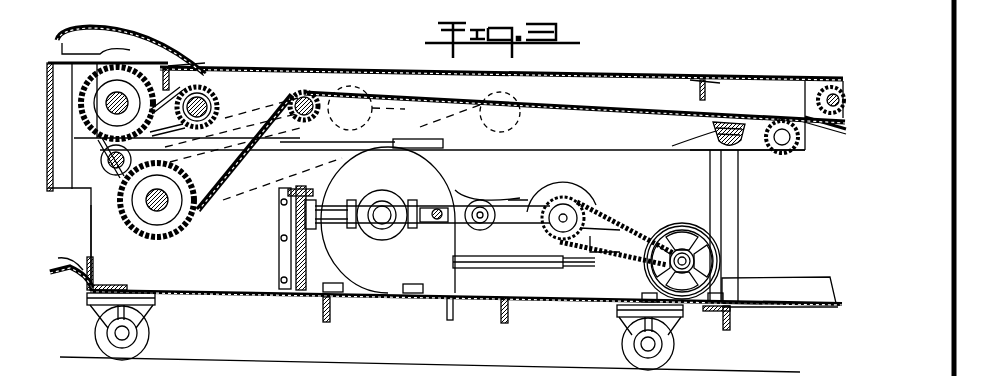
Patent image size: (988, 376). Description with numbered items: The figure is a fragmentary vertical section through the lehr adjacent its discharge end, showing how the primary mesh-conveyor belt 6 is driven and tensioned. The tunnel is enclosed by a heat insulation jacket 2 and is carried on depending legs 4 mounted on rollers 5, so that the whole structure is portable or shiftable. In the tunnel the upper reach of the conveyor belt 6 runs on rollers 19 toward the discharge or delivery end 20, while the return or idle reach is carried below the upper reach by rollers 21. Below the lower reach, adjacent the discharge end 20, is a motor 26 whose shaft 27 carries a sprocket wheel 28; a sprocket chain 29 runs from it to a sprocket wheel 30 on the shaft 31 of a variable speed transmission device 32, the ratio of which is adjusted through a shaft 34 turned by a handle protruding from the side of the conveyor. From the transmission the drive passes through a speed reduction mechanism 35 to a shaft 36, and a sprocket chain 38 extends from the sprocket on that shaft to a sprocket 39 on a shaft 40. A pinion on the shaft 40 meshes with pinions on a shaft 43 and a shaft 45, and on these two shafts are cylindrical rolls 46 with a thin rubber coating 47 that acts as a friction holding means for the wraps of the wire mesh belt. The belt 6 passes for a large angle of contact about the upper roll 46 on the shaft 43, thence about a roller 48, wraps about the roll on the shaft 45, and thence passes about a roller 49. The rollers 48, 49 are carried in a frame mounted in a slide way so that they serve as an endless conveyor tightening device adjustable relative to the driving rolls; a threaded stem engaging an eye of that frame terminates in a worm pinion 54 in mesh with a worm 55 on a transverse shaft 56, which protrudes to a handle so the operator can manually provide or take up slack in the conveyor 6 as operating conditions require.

The heat insulation jacket 2 is at (444, 217).
The depending legs 4 is at (150, 310).
The rollers 5 is at (148, 334).
The primary mesh-conveyor belt 6 is at (772, 78).
The rollers 19 is at (816, 102).
The discharge or delivery end 20 is at (103, 182).
The rollers 21 is at (777, 154).
The motor 26 is at (710, 252).
The shaft 27 is at (692, 262).
The sprocket wheel 28 is at (678, 249).
The sprocket chain 29 is at (612, 232).
The sprocket wheel 30 is at (596, 204).
The shaft 31 is at (548, 232).
The variable speed transmission device 32 is at (568, 182).
The shaft 34 is at (436, 224).
The speed reduction mechanism 35 is at (462, 172).
The shaft 36 is at (386, 208).
The sprocket chain 38 is at (202, 66).
The sprocket 39 is at (92, 38).
The shaft 40 is at (74, 247).
The shaft 43 is at (112, 92).
The shaft 45 is at (165, 196).
The cylindrical rolls 46 is at (155, 92).
The thin rubber coating 47 is at (219, 98).
The roller 48 is at (535, 113).
The roller 49 is at (324, 112).
The worm pinion 54 is at (728, 122).
The worm 55 is at (682, 141).
The transverse shaft 56 is at (724, 140).